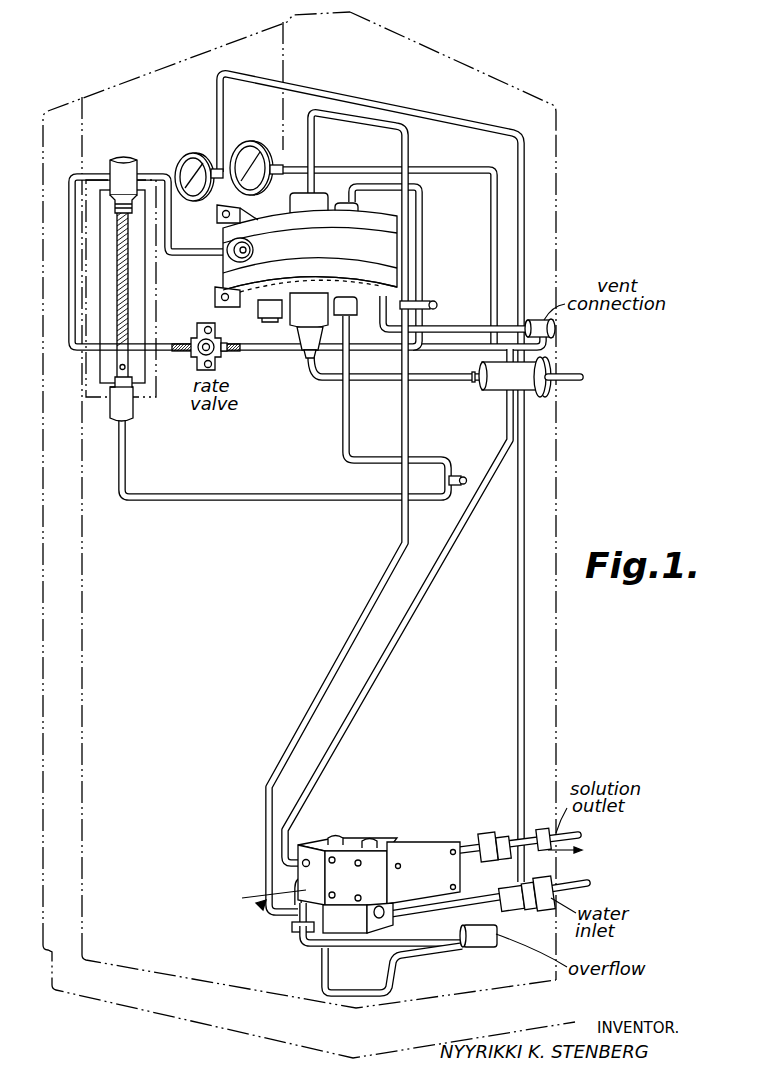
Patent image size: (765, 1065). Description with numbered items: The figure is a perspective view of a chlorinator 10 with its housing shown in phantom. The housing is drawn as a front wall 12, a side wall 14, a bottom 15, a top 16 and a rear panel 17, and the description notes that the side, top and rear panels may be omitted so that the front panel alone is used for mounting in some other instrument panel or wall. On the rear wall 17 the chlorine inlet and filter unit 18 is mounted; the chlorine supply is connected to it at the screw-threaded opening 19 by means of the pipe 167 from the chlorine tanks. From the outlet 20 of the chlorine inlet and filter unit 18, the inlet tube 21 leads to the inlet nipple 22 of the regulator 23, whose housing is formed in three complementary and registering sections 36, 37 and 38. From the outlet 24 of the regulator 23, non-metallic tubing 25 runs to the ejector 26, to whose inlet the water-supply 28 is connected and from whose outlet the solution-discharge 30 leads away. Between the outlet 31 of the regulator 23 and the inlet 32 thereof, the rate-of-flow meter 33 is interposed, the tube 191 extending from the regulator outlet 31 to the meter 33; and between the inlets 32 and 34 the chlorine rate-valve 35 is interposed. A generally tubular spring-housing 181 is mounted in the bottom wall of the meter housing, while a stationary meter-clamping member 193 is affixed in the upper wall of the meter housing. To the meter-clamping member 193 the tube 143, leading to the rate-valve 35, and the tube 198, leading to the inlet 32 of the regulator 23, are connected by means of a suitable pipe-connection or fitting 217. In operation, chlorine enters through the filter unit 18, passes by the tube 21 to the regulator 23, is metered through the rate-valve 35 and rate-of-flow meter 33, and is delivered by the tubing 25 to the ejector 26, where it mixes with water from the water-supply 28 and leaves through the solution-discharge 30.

The flow direction / feeder system 10 is at (426, 886).
The front wall 12 is at (168, 77).
The side wall 14 is at (498, 67).
The bottom 15 is at (210, 1027).
The top 16 is at (417, 42).
The rear panel 17 is at (397, 606).
The chlorine inlet and filter unit 18 is at (500, 380).
The chlorine supply connection 19 is at (480, 371).
The outlet 20 is at (481, 383).
The inlet tube 21 is at (387, 379).
The inlet nipple 22 is at (307, 337).
The regulator 23 is at (390, 220).
The outlet 24 is at (315, 193).
The non-metallic tubing 25 is at (409, 153).
The ejector 26 is at (375, 831).
The water-supply 28 is at (464, 908).
The solution-discharge 30 is at (580, 834).
The outlet 31 is at (351, 315).
The inlet 32 is at (253, 250).
The rate-of-flow meter 33 is at (133, 367).
The inlet 34 is at (354, 203).
The chlorine rate-valve 35 is at (220, 353).
The housing section 36 is at (373, 277).
The housing section 37 is at (310, 253).
The housing section 38 is at (316, 222).
The tube 143 is at (70, 289).
The pipe 167 is at (574, 374).
The spring-housing 181 is at (133, 407).
The tube 191 is at (343, 424).
The meter-clamping member 193 is at (123, 182).
The tube 198 is at (201, 257).
The pipe-connection or fitting 217 is at (127, 145).